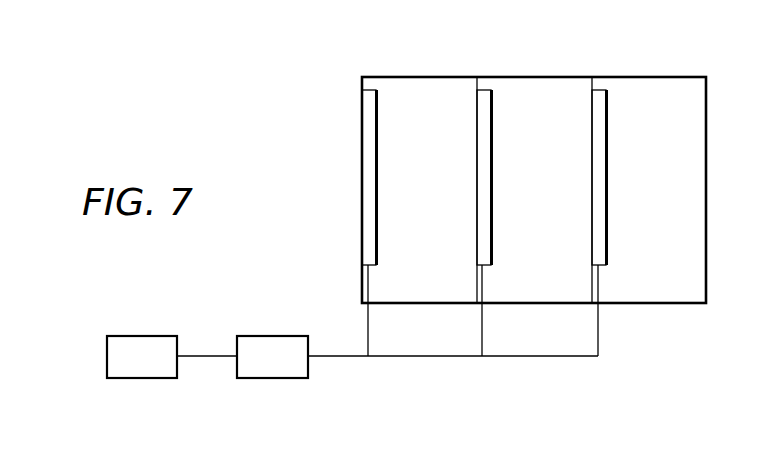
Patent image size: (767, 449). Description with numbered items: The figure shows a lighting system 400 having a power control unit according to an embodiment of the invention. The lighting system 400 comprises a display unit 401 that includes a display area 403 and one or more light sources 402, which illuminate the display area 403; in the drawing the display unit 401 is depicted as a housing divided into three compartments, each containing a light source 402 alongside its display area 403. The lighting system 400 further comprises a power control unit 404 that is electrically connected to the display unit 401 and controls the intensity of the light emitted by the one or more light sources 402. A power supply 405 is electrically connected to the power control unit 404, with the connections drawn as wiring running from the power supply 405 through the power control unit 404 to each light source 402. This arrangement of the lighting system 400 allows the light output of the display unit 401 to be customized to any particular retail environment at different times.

The lighting system 400 is at (307, 153).
The display unit 401 is at (662, 303).
The light sources 402 is at (378, 103).
The display area 403 is at (436, 104).
The power control unit 404 is at (270, 335).
The power supply 405 is at (138, 335).